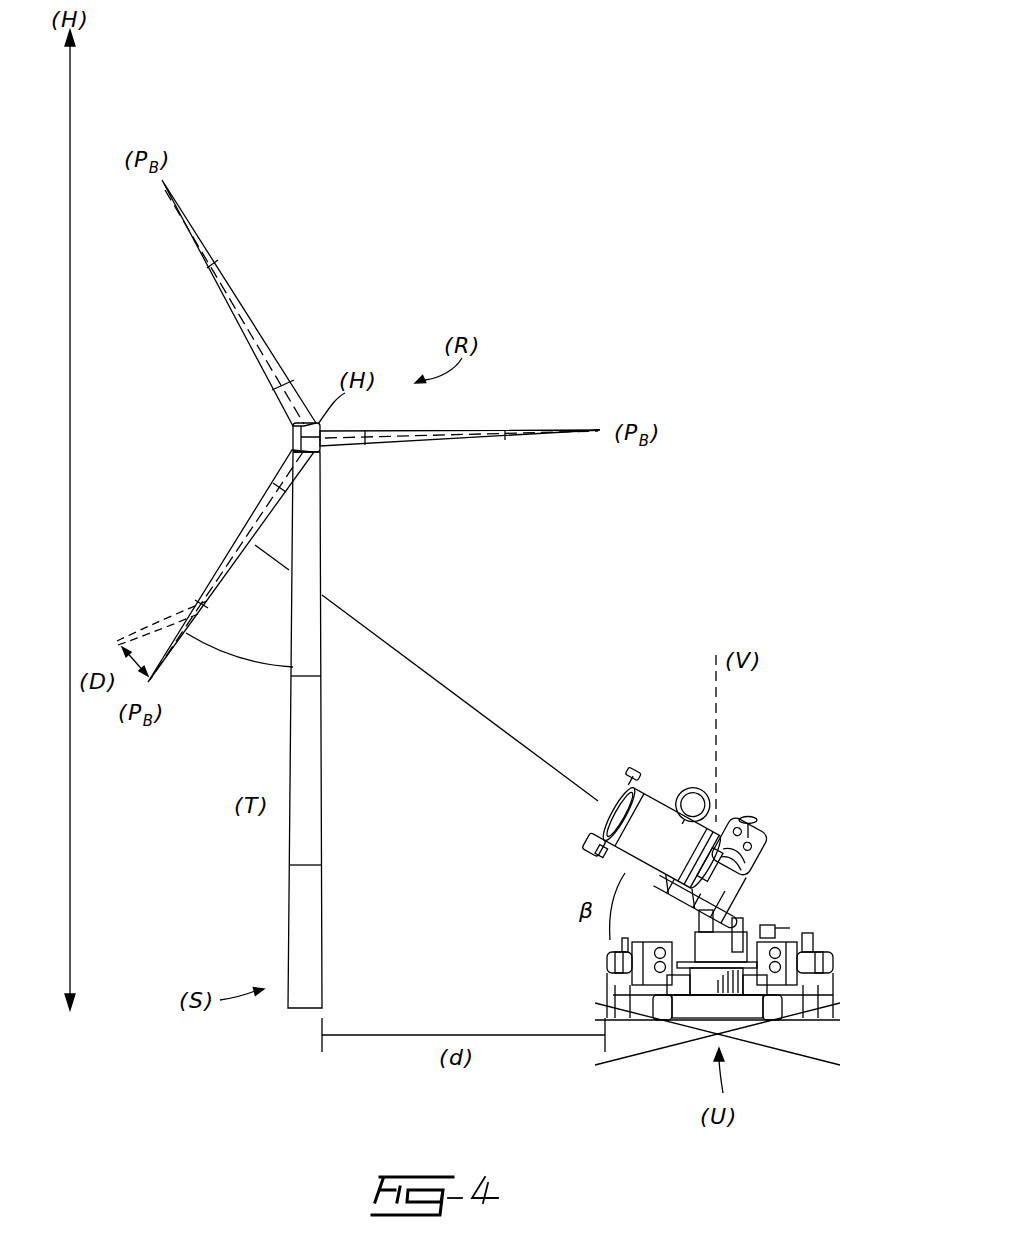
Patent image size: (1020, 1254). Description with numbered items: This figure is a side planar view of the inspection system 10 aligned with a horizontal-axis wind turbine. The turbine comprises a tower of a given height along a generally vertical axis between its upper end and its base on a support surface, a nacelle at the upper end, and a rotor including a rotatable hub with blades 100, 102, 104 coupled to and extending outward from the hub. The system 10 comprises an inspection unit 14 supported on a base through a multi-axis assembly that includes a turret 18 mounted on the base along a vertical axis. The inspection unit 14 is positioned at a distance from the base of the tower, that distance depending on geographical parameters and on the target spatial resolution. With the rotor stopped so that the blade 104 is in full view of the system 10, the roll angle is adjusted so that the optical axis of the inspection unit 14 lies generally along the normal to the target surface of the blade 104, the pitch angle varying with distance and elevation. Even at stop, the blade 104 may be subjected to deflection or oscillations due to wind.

The system 10 is at (718, 859).
The inspection unit 14 is at (666, 781).
The turret 18 is at (696, 942).
The blade 100 is at (235, 286).
The blade 102 is at (463, 419).
The blade 104 is at (167, 627).